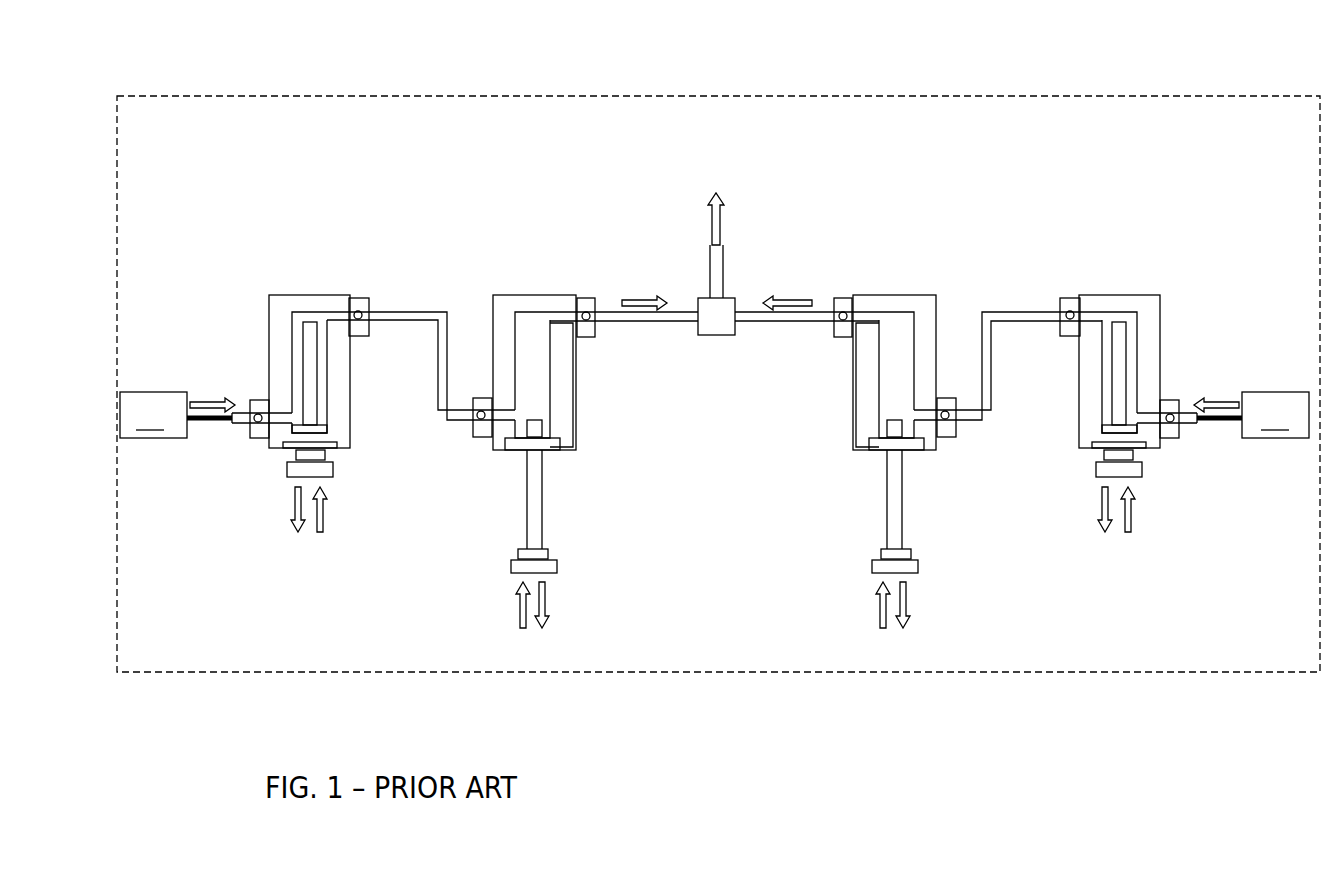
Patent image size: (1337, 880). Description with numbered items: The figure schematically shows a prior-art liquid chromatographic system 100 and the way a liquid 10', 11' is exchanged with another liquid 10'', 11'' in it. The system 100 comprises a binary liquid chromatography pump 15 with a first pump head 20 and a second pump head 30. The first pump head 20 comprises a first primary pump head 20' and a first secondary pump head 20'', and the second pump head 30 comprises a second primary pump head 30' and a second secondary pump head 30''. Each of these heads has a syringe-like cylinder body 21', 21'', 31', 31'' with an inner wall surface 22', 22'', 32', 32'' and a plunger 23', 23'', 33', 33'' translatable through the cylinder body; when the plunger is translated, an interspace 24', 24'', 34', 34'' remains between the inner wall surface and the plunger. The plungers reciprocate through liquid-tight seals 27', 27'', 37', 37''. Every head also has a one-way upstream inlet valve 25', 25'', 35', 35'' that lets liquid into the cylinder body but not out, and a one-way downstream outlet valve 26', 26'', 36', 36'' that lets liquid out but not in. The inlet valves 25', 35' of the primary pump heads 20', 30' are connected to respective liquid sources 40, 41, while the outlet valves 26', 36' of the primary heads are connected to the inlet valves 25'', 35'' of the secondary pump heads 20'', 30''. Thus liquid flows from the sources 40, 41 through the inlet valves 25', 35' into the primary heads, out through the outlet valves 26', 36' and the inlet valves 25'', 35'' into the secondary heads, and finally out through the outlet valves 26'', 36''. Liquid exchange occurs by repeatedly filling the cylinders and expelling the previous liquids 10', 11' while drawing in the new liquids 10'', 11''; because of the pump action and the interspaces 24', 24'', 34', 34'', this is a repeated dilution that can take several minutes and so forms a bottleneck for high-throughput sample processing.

The liquid chromatographic system 100 is at (461, 86).
The binary liquid chromatography pump 15 is at (716, 572).
The first pump head 20 is at (409, 392).
The second pump head 30 is at (1022, 392).
The first primary pump head 20' is at (287, 364).
The first secondary pump head 20'' is at (565, 412).
The second primary pump head 30' is at (1130, 366).
The second secondary pump head 30'' is at (883, 412).
The cylinder body 21' is at (264, 371).
The cylinder body 21'' is at (586, 372).
The cylinder body 31' is at (1170, 371).
The cylinder body 31'' is at (848, 372).
The inner wall surface 22' is at (240, 372).
The inner wall surface 22'' is at (613, 385).
The inner wall surface 32' is at (1068, 372).
The inner wall surface 32'' is at (826, 385).
The plunger 23' is at (362, 373).
The plunger 23'' is at (577, 539).
The plunger 33' is at (1170, 373).
The plunger 33'' is at (939, 539).
The interspace 24' is at (356, 414).
The interspace 24'' is at (588, 436).
The interspace 34' is at (1073, 422).
The interspace 34'' is at (837, 430).
The one-way upstream inlet valve 25' is at (265, 453).
The one-way upstream inlet valve 25'' is at (489, 449).
The one-way upstream inlet valve 35' is at (1180, 468).
The one-way upstream inlet valve 35'' is at (957, 449).
The one-way downstream outlet valve 26' is at (363, 284).
The one-way downstream outlet valve 26'' is at (594, 285).
The one-way downstream outlet valve 36' is at (1070, 283).
The one-way downstream outlet valve 36'' is at (844, 283).
The liquid-tight seal 27' is at (351, 487).
The liquid-tight seal 27'' is at (585, 464).
The liquid-tight seal 37' is at (1092, 489).
The liquid-tight seal 37'' is at (868, 487).
The liquid 10' is at (537, 334).
The liquid 10'' is at (232, 464).
The liquid 11' is at (917, 334).
The liquid 11'' is at (1196, 462).
The liquid source 40 is at (177, 415).
The liquid source 41 is at (1251, 415).